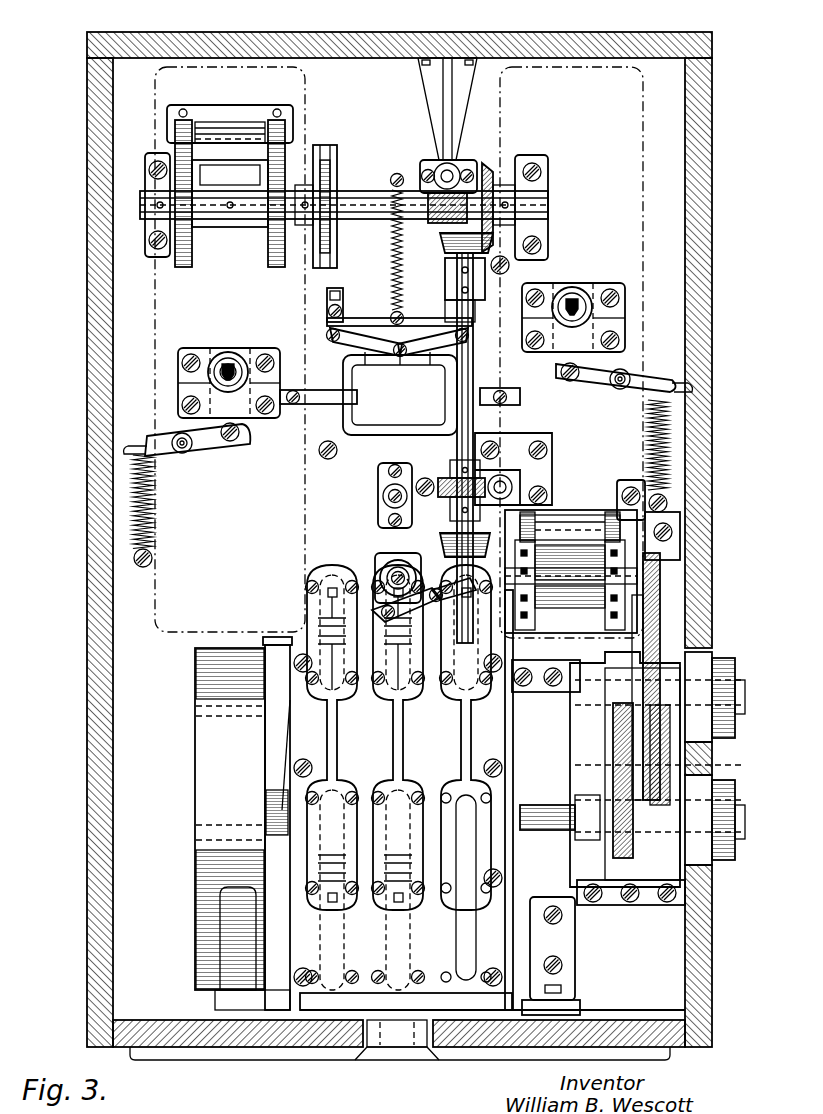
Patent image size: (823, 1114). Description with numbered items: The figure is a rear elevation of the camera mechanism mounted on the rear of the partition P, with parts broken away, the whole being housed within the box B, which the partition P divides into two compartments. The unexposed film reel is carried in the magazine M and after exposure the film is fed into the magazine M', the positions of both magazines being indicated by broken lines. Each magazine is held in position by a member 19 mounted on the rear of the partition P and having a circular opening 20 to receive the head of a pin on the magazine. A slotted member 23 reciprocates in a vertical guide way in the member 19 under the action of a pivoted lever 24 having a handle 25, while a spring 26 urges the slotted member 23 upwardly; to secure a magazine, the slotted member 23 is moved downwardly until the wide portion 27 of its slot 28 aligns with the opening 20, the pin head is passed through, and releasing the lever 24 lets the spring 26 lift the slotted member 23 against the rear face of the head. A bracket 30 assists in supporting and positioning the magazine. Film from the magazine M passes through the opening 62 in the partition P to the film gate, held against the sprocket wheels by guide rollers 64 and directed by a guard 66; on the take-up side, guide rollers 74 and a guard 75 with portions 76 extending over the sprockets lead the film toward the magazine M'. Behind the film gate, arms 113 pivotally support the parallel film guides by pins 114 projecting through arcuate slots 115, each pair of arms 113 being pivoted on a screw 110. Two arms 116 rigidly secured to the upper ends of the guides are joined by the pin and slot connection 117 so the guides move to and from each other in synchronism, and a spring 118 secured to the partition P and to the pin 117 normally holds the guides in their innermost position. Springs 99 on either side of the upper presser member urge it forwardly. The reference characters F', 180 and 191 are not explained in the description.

The box B is at (376, 33).
The partition P is at (426, 109).
The magazine M is at (217, 366).
The magazine M' is at (571, 352).
The armature frame F' is at (399, 777).
The bearing block 180 is at (432, 170).
The guide rollers 64 is at (188, 120).
The guard 66 is at (235, 136).
The opening 62 is at (205, 166).
The spring 118 is at (396, 246).
The pin and slot connection 117 is at (396, 316).
The arms 116 is at (332, 304).
The member 19 is at (196, 348).
The wide portion of the slot 27 is at (232, 352).
The circular opening 20 is at (222, 374).
The slot 28 is at (245, 362).
The pins 114 is at (328, 340).
The arcuate slots 115 is at (334, 362).
The arms 113 is at (374, 356).
The screw 110 is at (398, 562).
The springs 99 is at (320, 404).
The pivoted lever 24 is at (150, 436).
The slotted member 23 is at (238, 440).
The handle 25 is at (128, 448).
The spring 26 is at (138, 505).
The bearing 191 is at (388, 494).
The guide rollers 74 is at (534, 528).
The guard 75 is at (570, 552).
The portions 76 is at (598, 596).
The bracket 30 is at (278, 636).